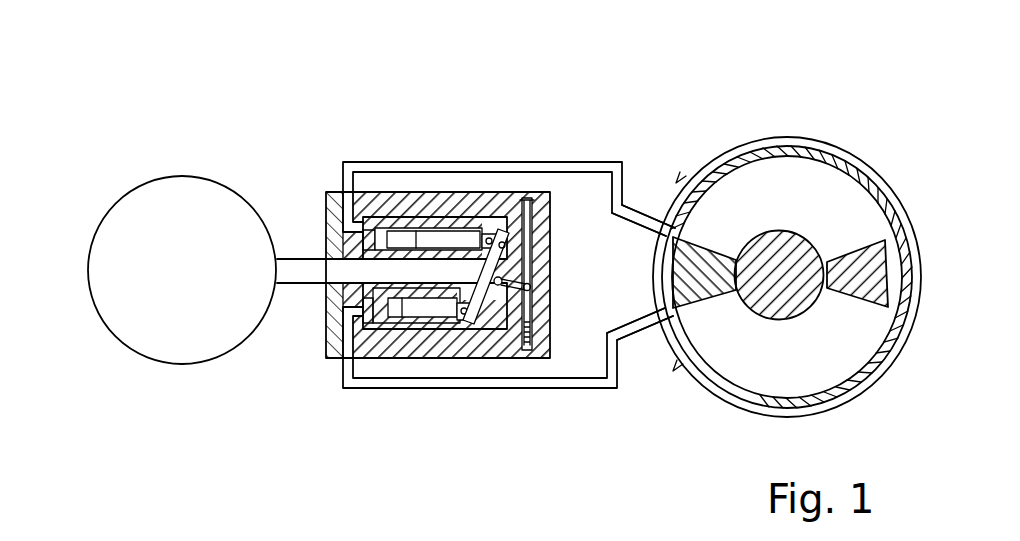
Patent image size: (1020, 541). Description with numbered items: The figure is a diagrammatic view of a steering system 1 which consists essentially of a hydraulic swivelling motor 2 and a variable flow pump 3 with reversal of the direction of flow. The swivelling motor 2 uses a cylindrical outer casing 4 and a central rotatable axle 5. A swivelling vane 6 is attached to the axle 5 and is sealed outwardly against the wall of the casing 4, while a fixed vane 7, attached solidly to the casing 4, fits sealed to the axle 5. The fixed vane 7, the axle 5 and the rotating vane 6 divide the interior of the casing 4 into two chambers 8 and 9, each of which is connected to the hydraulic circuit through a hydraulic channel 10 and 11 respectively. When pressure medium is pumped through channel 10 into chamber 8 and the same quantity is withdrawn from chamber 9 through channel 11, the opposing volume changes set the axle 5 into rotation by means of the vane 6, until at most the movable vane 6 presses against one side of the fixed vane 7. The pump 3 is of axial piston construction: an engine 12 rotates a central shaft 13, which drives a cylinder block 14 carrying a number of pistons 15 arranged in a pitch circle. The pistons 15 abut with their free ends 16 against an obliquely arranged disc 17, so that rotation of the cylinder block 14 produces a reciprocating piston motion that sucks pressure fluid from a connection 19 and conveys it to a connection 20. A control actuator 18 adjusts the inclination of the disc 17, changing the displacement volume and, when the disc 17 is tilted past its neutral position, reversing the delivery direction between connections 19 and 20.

The steering system 1 is at (523, 81).
The hydraulic swivelling motor 2 is at (787, 245).
The variable flow pump 3 is at (457, 325).
The cylindrical outer casing 4 is at (738, 168).
The central rotatable axle 5 is at (788, 293).
The swivelling vane 6 is at (864, 254).
The fixed vane 7 is at (676, 378).
The chamber 8 is at (780, 197).
The chamber 9 is at (767, 353).
The hydraulic channel 10 is at (653, 212).
The hydraulic channel 11 is at (627, 335).
The engine 12 is at (175, 280).
The central shaft 13 is at (295, 265).
The cylinder block 14 is at (390, 226).
The piston 15 is at (433, 238).
The free end 16 is at (493, 240).
The disc 17 is at (494, 335).
The control actuator 18 is at (529, 232).
The connection 19 is at (350, 213).
The connection 20 is at (340, 335).